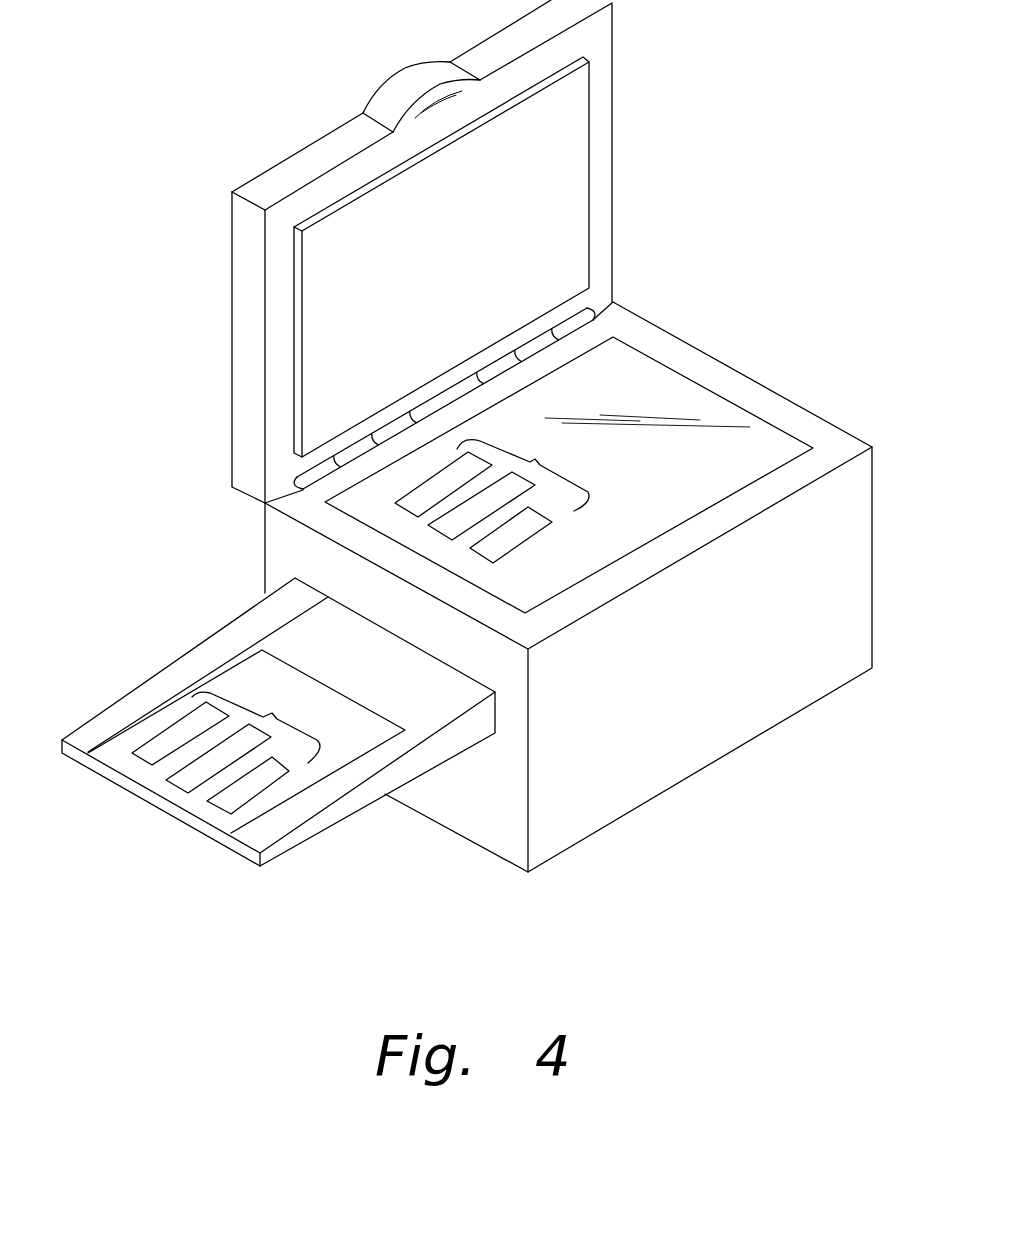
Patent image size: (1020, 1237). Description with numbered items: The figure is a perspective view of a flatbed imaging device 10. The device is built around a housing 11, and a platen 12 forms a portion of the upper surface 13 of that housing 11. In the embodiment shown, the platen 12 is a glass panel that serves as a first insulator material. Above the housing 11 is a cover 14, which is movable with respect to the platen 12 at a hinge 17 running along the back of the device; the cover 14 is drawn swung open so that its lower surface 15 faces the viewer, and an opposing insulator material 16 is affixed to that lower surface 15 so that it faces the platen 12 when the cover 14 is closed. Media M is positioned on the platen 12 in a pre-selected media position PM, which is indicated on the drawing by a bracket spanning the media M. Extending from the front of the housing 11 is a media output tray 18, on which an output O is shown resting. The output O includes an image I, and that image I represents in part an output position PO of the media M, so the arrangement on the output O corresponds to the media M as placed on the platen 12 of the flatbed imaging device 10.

The flatbed imaging device 10 is at (789, 138).
The housing 11 is at (856, 551).
The platen 12 is at (700, 402).
The upper surface 13 is at (298, 512).
The cover 14 is at (246, 255).
The lower surface 15 is at (273, 353).
The opposing insulator material 16 is at (577, 149).
The hinge 17 is at (572, 322).
The media output tray 18 is at (338, 812).
The output O is at (167, 713).
The image I is at (170, 778).
The output position PO is at (256, 726).
The media M is at (518, 537).
The pre-selected media position PM is at (523, 475).